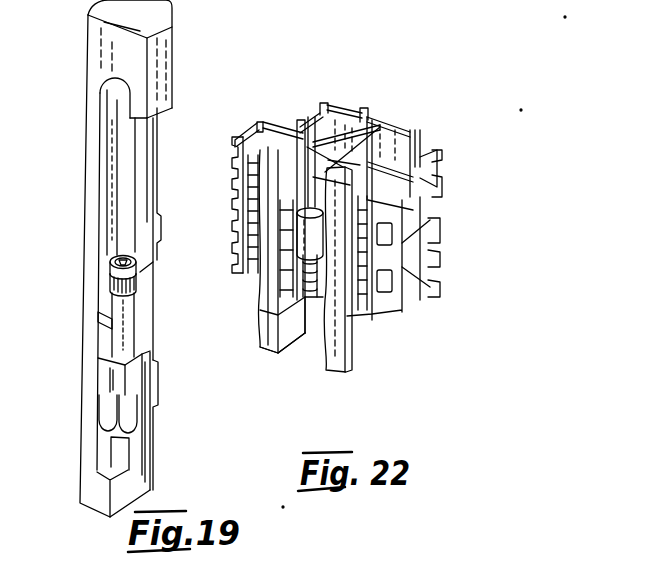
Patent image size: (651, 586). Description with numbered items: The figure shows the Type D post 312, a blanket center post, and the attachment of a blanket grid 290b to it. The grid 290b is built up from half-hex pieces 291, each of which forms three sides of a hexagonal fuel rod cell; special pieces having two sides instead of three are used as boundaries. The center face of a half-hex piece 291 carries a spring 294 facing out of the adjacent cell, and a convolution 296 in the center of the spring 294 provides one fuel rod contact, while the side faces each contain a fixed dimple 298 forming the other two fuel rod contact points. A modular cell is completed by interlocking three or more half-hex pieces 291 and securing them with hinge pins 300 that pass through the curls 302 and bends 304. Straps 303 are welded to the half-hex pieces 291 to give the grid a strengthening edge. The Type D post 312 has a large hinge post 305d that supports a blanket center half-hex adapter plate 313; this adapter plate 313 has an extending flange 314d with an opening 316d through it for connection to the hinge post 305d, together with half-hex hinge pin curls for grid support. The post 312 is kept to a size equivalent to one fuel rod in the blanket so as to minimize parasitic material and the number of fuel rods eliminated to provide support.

In FIG. 19, the type D post 312 is at (122, 20).
In FIG. 19, the large hinge post 305d is at (123, 307).
In FIG. 22, the blanket grid 290b is at (346, 106).
In FIG. 22, the hinge pin 300 is at (259, 121).
In FIG. 22, the curl 302 is at (236, 158).
In FIG. 22, the fixed dimple 298 is at (248, 203).
In FIG. 22, the half-hex piece 291 is at (405, 135).
In FIG. 22, the bend 304 is at (404, 253).
In FIG. 22, the opening 316d is at (302, 216).
In FIG. 22, the extending flange 314d is at (300, 236).
In FIG. 22, the strap 303 is at (336, 362).
In FIG. 22, the blanket center half-hex adapter plate 313 is at (272, 355).
In FIG. 22, the spring 294 is at (383, 300).
In FIG. 22, the convolution 296 is at (386, 280).